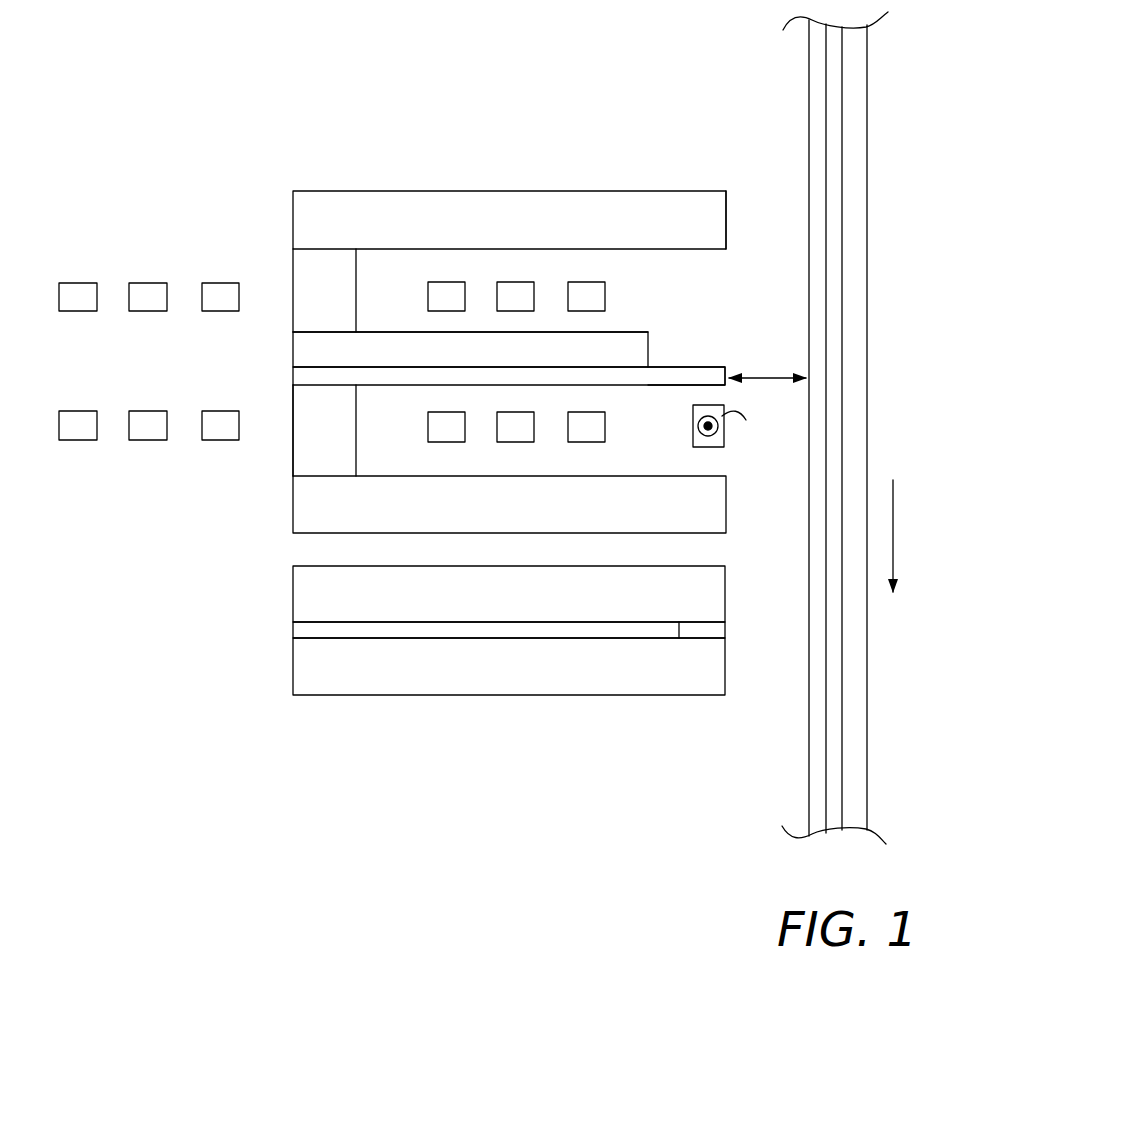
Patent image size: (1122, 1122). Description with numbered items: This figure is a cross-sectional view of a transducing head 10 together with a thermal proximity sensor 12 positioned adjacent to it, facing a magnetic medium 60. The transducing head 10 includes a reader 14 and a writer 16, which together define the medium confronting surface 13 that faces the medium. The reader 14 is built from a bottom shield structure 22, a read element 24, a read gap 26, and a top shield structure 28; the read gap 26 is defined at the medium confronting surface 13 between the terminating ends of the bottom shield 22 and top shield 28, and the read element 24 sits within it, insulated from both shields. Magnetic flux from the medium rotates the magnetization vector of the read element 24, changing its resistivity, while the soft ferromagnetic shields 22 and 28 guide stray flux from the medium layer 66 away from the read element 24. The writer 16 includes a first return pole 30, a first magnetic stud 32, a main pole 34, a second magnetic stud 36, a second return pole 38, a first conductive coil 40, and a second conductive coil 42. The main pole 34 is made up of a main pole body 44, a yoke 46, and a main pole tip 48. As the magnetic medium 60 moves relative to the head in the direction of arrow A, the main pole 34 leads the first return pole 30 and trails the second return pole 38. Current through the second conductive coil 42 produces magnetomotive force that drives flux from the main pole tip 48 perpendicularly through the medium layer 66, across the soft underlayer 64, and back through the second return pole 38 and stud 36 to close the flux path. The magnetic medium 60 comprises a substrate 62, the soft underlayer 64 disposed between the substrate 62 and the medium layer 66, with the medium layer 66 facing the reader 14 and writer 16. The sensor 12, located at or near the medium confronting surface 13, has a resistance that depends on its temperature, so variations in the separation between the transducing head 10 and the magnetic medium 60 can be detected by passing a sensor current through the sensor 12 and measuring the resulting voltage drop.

The transducing head 10 is at (213, 106).
The thermal proximity sensor 12 is at (722, 438).
The medium confronting surface 13 is at (731, 213).
The reader 14 is at (246, 617).
The writer 16 is at (278, 245).
The bottom shield structure 22 is at (303, 672).
The read element 24 is at (712, 630).
The read gap 26 is at (288, 639).
The top shield structure 28 is at (300, 581).
The first return pole 30 is at (300, 512).
The first magnetic stud 32 is at (300, 444).
The main pole 34 is at (270, 330).
The second magnetic stud 36 is at (300, 293).
The second return pole 38 is at (312, 211).
The first conductive coil 40 is at (117, 452).
The second conductive coil 42 is at (128, 270).
The main pole body 44 is at (427, 345).
The yoke 46 is at (402, 374).
The main pole tip 48 is at (703, 380).
The magnetic medium 60 is at (904, 114).
The substrate 62 is at (855, 208).
The soft underlayer 64 is at (832, 265).
The medium layer 66 is at (818, 325).